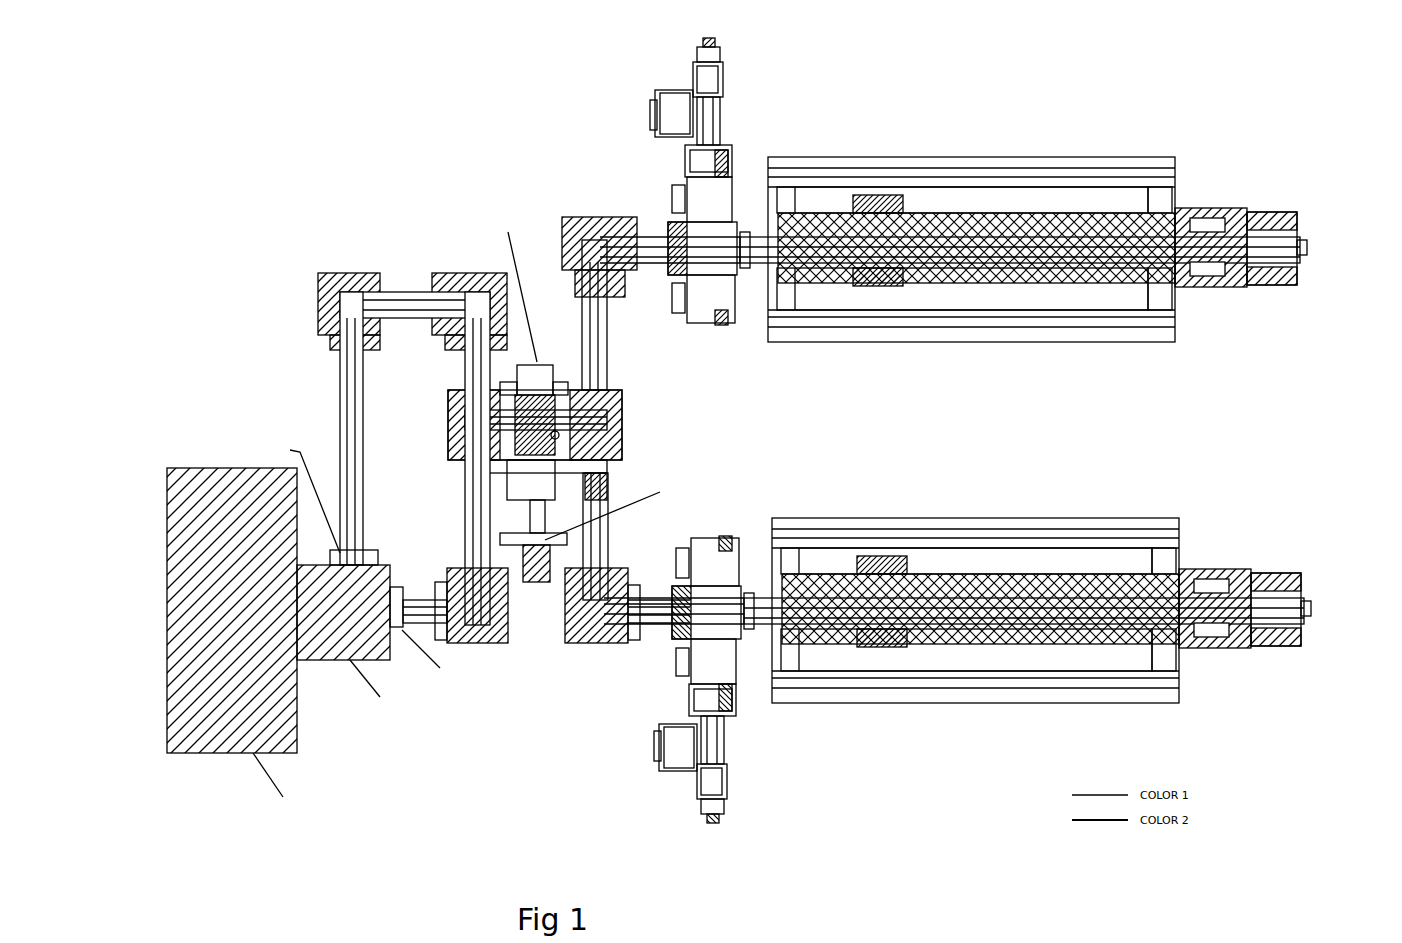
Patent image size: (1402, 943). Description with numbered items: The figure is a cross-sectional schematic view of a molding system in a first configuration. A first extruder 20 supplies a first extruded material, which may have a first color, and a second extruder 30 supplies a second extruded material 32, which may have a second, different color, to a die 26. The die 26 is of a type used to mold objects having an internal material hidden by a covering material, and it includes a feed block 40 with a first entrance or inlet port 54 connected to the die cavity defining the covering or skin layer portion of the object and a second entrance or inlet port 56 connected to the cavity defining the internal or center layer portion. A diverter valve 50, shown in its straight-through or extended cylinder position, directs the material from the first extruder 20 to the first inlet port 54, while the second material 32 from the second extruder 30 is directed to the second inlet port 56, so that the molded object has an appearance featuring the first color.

The first extruder 20 is at (975, 146).
The second extruder 30 is at (964, 508).
The second extruded material 32 is at (458, 360).
The diverter valve 50 is at (622, 430).
The first entrance or inlet port 54 is at (390, 566).
The second entrance or inlet port 56 is at (378, 655).
The die 26 is at (165, 628).
The feed block 40 is at (320, 662).